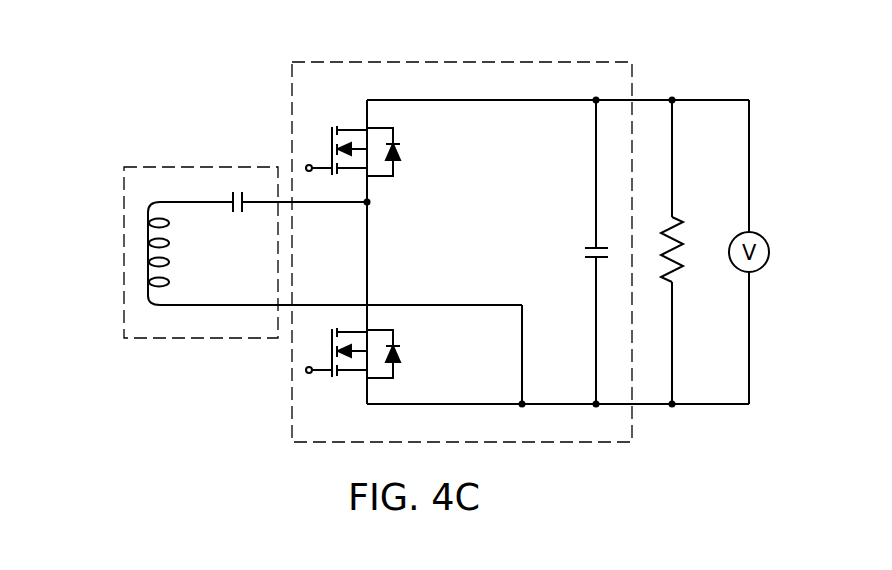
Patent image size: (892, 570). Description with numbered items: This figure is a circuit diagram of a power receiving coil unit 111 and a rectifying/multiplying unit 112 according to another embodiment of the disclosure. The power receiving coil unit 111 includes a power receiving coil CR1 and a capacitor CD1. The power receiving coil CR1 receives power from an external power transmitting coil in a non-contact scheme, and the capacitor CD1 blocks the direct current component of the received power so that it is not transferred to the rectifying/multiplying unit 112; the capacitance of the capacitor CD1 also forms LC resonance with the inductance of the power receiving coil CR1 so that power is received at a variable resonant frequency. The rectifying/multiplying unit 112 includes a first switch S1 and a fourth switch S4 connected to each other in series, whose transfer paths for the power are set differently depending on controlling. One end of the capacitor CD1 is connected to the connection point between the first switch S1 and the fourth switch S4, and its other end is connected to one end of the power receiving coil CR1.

The power receiving coil unit 111 is at (148, 253).
The rectifying/multiplying unit 112 is at (525, 61).
The first switch S1 is at (370, 151).
The fourth switch S4 is at (370, 353).
The capacitor CD1 is at (237, 215).
The power receiving coil CR1 is at (182, 253).